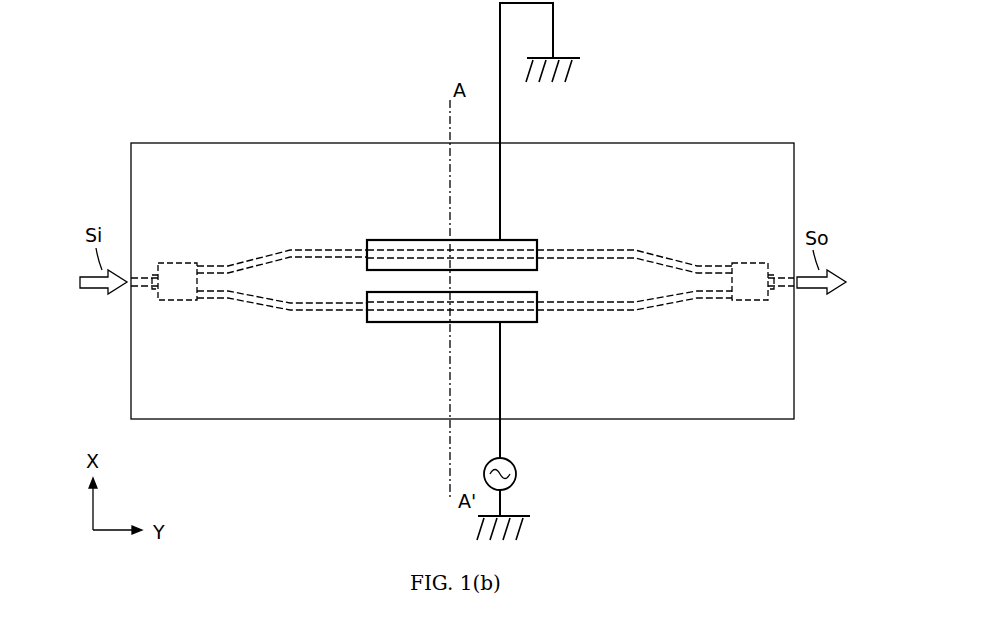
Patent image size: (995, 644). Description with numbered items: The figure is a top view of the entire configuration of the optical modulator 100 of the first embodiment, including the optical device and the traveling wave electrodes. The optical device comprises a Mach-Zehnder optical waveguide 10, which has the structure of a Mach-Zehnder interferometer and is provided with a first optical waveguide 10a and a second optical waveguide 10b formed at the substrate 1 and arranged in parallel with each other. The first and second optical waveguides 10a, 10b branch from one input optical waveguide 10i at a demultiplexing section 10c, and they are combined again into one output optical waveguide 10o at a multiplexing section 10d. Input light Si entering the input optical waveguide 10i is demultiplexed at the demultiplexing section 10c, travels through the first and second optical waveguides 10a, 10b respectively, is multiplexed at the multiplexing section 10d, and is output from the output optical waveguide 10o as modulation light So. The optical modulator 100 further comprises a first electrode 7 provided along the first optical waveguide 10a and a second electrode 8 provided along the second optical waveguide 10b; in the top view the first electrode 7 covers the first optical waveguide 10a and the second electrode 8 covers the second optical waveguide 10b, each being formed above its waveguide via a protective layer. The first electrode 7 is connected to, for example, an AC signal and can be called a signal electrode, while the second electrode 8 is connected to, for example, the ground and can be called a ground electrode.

The substrate 1 is at (148, 143).
The optical modulator 100 is at (651, 80).
The Mach-Zehnder optical waveguide 10 is at (562, 245).
The input optical waveguide 10i is at (150, 292).
The demultiplexing section 10c is at (178, 263).
The second optical waveguide 10b is at (345, 243).
The first optical waveguide 10a is at (340, 312).
The multiplexing section 10d is at (747, 263).
The output optical waveguide 10o is at (780, 290).
The second electrode 8 is at (415, 240).
The first electrode 7 is at (426, 322).